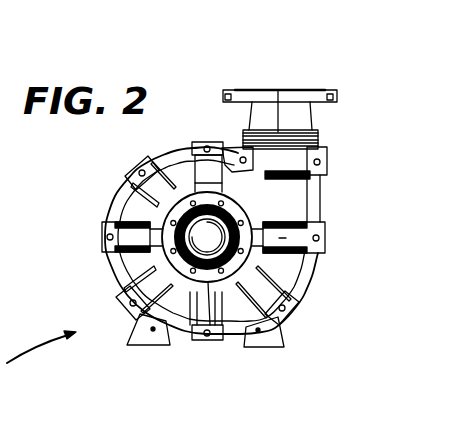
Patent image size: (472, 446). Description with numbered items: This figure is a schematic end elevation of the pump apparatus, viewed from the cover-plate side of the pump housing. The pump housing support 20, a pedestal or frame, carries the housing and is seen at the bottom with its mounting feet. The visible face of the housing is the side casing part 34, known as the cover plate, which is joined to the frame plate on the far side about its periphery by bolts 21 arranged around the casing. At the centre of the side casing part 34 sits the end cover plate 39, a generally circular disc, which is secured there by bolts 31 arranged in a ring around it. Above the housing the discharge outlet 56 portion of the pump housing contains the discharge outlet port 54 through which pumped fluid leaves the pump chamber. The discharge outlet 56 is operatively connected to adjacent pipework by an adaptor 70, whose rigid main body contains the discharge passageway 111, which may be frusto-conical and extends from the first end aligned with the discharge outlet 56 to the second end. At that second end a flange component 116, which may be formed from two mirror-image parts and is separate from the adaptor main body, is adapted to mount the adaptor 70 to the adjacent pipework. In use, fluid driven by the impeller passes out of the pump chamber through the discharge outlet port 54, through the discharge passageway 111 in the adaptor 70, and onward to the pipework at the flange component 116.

The pump housing support 20 is at (140, 337).
The bolts 21 is at (286, 312).
The bolts 31 is at (242, 218).
The side casing part 34 is at (281, 268).
The end cover plate 39 is at (222, 338).
The discharge outlet port 54 is at (278, 90).
The discharge outlet 56 is at (318, 142).
The adaptor 70 is at (310, 117).
The discharge passageway 111 is at (267, 90).
The flange component 116 is at (322, 97).